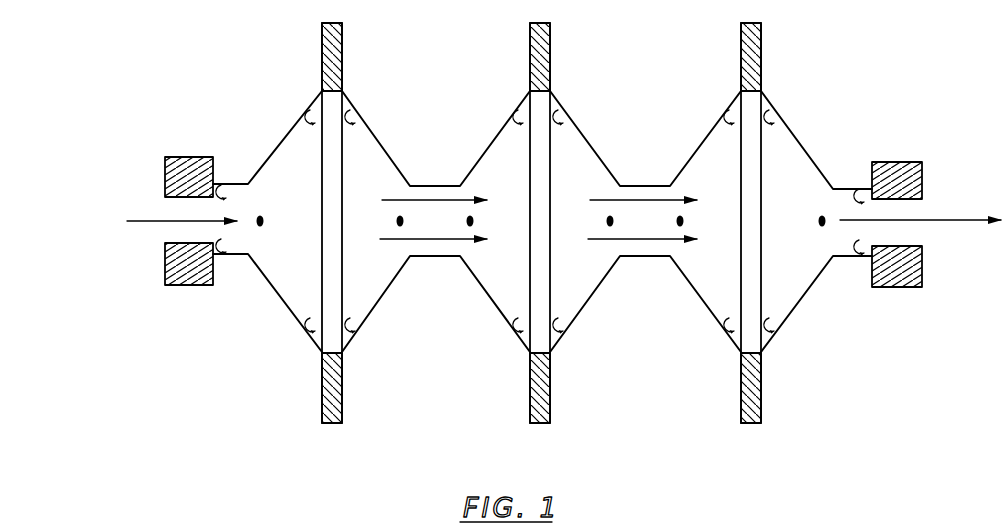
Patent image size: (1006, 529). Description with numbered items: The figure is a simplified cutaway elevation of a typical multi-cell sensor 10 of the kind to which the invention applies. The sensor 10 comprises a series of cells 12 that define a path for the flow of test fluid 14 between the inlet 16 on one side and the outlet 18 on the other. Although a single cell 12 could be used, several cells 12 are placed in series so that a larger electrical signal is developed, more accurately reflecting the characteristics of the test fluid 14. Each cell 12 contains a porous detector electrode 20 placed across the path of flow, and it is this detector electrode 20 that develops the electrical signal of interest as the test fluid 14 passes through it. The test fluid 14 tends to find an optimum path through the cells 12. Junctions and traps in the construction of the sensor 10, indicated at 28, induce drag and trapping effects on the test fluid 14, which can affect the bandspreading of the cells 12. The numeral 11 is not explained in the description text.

The sensor 10 is at (822, 84).
The inlet housing wall 11 is at (346, 93).
The cell 12 is at (281, 127).
The test fluid 14 is at (137, 220).
The inlet 16 is at (160, 243).
The outlet 18 is at (920, 209).
The porous detector electrode 20 is at (334, 197).
The junctions and traps 28 is at (224, 172).